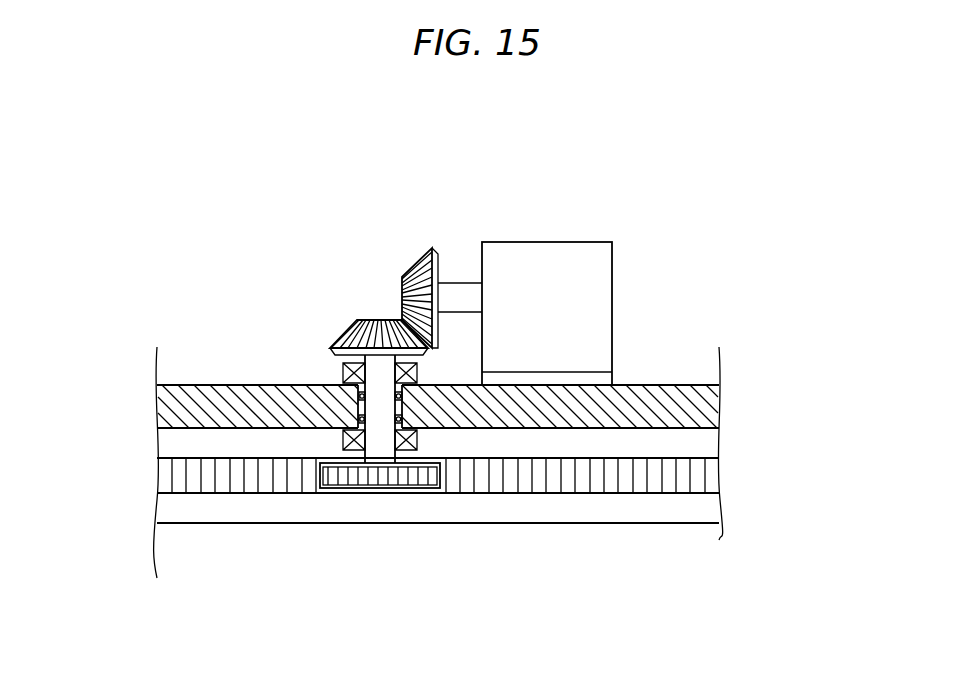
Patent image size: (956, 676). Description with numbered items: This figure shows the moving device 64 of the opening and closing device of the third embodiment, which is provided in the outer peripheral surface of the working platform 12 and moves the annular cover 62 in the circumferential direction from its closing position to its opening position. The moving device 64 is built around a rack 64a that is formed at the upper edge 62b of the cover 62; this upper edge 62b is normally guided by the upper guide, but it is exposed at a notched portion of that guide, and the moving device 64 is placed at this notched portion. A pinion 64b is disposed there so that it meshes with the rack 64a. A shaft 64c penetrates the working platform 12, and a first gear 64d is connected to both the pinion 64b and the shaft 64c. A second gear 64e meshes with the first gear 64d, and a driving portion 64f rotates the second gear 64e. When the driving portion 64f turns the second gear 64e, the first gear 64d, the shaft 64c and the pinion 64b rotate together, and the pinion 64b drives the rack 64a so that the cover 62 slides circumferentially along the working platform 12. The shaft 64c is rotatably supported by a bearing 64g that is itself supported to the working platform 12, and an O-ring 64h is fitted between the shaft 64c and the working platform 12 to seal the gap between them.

The working platform 12 is at (257, 415).
The cover 62 is at (205, 512).
The upper edge 62b is at (313, 510).
The moving device 64 is at (513, 242).
The rack 64a is at (553, 478).
The pinion 64b is at (390, 480).
The shaft 64c is at (366, 468).
The first gear 64d is at (350, 322).
The second gear 64e is at (410, 262).
The driving portion 64f is at (595, 287).
The bearing 64g is at (340, 440).
The O-ring 64h is at (403, 417).